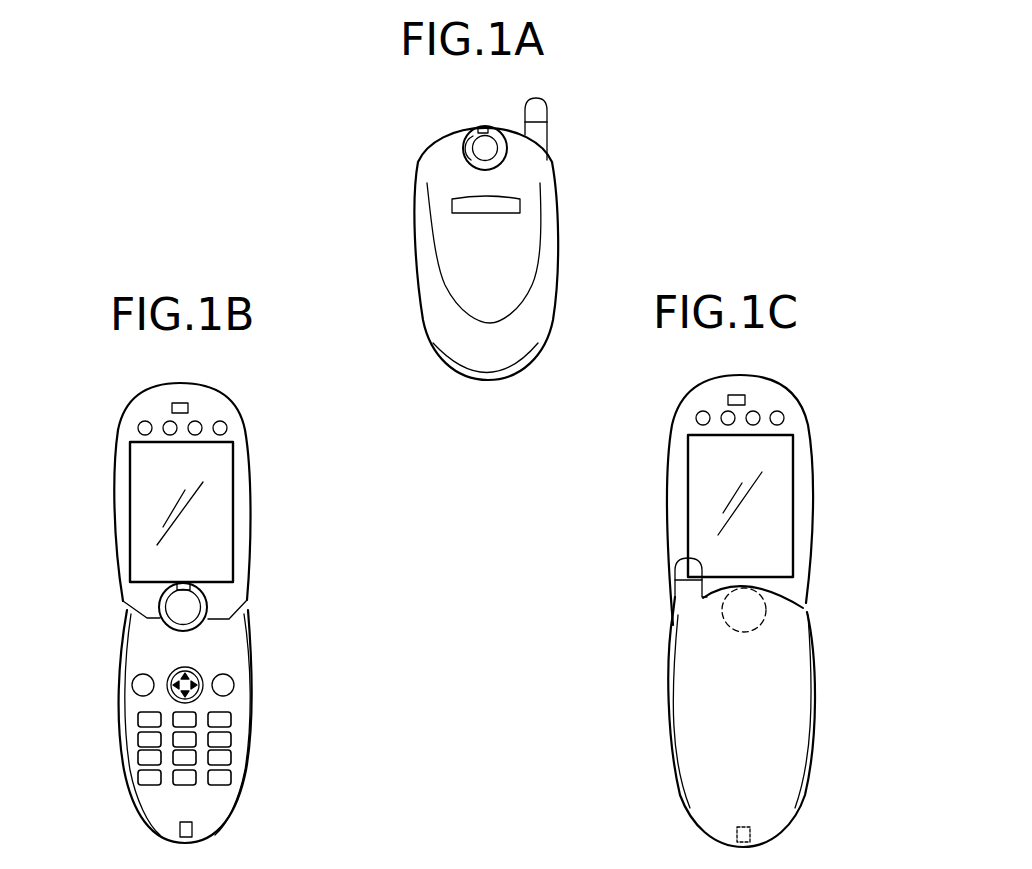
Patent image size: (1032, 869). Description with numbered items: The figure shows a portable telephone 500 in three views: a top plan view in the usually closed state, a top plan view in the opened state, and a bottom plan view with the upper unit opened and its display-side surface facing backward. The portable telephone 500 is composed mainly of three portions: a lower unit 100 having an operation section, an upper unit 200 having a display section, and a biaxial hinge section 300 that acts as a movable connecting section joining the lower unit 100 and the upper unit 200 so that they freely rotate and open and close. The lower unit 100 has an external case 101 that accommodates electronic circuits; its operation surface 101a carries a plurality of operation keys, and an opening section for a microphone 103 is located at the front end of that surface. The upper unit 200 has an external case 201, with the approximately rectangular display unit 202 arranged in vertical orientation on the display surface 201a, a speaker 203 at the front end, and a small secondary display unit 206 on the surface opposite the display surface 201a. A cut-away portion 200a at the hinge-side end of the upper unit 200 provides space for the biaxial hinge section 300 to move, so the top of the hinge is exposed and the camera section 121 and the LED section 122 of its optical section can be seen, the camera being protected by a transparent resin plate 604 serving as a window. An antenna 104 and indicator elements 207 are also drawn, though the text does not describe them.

In FIG. 1B, the lower unit 100 is at (199, 734).
In FIG. 1C, the lower unit 100 is at (747, 717).
In FIG. 1B, the external case 101 is at (257, 647).
In FIG. 1C, the external case 101 is at (813, 702).
In FIG. 1B, the operation surface 101a is at (242, 703).
In FIG. 1B, the opening section for a microphone 103 is at (192, 830).
In FIG. 1C, the opening section for a microphone 103 is at (750, 834).
In FIG. 1A, the antenna 104 is at (546, 112).
In FIG. 1A, the camera section 121 is at (480, 152).
In FIG. 1B, the camera section 121 is at (190, 607).
In FIG. 1A, the optically transparent resin plate 604 is at (425, 173).
In FIG. 1B, the optically transparent resin plate 604 is at (266, 607).
In FIG. 1A, the LED section 122 is at (482, 127).
In FIG. 1B, the LED section 122 is at (192, 583).
In FIG. 1B, the upper unit 200 is at (199, 481).
In FIG. 1C, the upper unit 200 is at (742, 493).
In FIG. 1A, the cut-away portion 200a is at (468, 141).
In FIG. 1B, the cut-away portion 200a is at (167, 619).
In FIG. 1B, the external case 201 is at (252, 523).
In FIG. 1C, the external case 201 is at (805, 553).
In FIG. 1B, the display surface 201a is at (243, 463).
In FIG. 1B, the display unit 202 is at (225, 493).
In FIG. 1C, the display unit 202 is at (782, 502).
In FIG. 1B, the speaker 203 is at (190, 408).
In FIG. 1C, the speaker 203 is at (745, 400).
In FIG. 1A, the secondary display unit 206 is at (520, 204).
In FIG. 1B, the indicator lamps 207 is at (228, 424).
In FIG. 1C, the indicator lamps 207 is at (699, 421).
In FIG. 1A, the biaxial hinge section 300 is at (461, 120).
In FIG. 1B, the biaxial hinge section 300 is at (145, 598).
In FIG. 1C, the biaxial hinge section 300 is at (705, 609).
In FIG. 1A, the portable telephone 500 is at (385, 241).